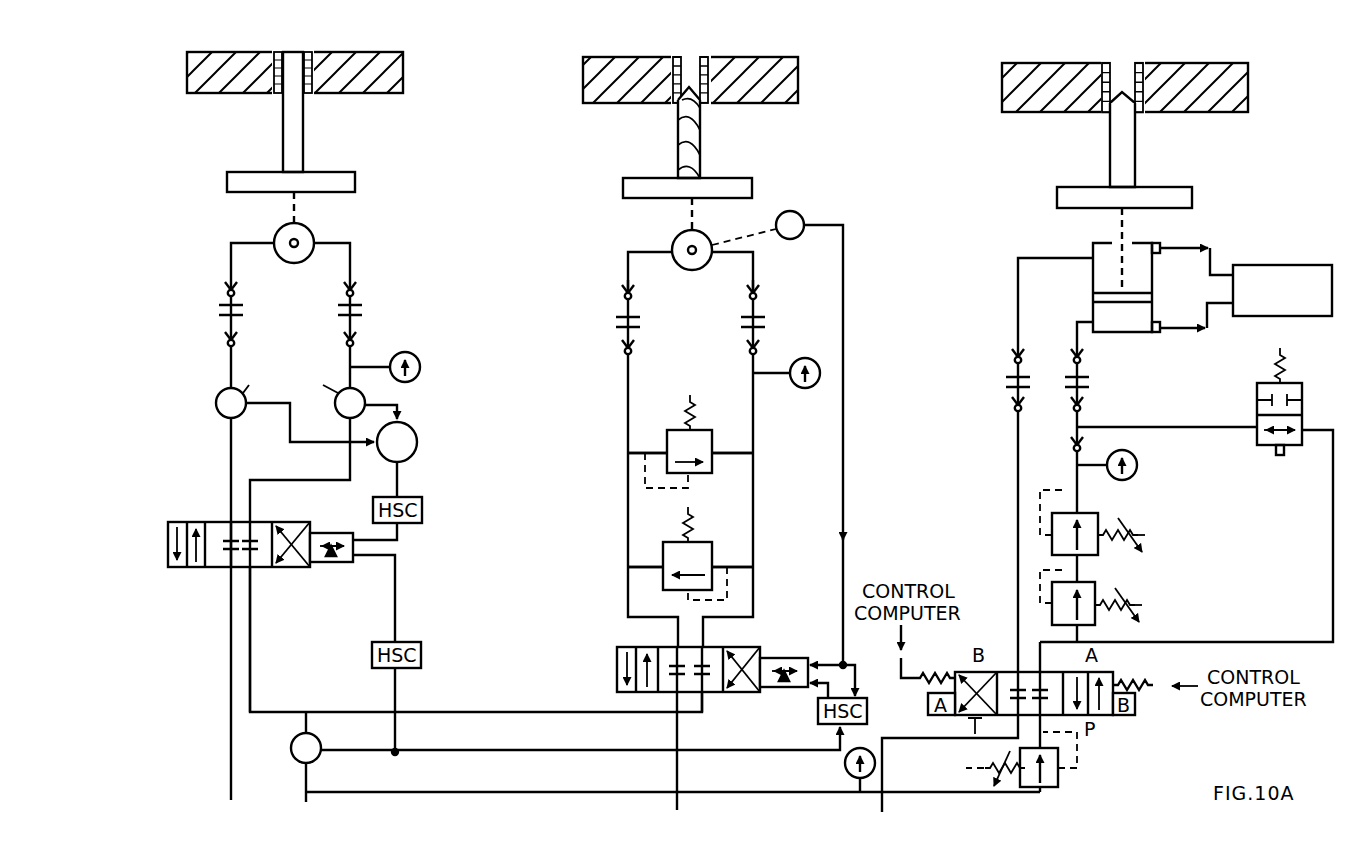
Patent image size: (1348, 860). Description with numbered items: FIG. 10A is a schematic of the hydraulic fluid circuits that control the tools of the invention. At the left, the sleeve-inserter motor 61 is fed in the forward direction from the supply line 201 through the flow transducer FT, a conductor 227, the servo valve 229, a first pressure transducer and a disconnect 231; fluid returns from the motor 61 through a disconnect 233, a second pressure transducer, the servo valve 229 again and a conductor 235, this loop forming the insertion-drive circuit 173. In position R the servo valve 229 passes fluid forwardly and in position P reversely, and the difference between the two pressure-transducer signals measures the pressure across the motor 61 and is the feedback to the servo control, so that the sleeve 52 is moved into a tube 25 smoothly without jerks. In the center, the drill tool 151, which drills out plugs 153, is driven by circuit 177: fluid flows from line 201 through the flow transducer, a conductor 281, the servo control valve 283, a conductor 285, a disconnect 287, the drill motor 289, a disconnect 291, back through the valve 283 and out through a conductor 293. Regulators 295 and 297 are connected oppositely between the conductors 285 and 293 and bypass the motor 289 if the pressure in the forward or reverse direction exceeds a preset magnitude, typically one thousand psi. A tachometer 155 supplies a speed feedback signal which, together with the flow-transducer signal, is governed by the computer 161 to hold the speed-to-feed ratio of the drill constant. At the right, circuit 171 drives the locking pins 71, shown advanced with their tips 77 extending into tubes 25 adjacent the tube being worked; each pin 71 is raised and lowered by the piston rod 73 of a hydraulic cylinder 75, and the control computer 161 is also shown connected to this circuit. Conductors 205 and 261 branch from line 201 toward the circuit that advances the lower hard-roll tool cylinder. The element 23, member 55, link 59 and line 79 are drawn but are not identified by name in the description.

The wall / workpiece 23 is at (738, 79).
The tube 25 is at (310, 95).
The sleeve 52 is at (270, 86).
The shaft 55 is at (271, 112).
The connecting link 59 is at (265, 207).
The motor 61 is at (310, 233).
The disconnect 233 is at (252, 313).
The disconnect 231 is at (332, 313).
The hydraulic fluid circuit 173 is at (423, 328).
The servo valve 229 is at (263, 544).
The conductor 235 is at (202, 609).
The conductor 227 is at (272, 639).
The line 201 is at (646, 757).
The plug 153 is at (665, 110).
The drill tool 151 is at (666, 138).
The tachometer 155 is at (783, 438).
The drill motor 289 is at (671, 242).
The disconnect 291 is at (605, 320).
The disconnect 287 is at (727, 320).
The conductor 293 is at (625, 585).
The regulator 297 is at (690, 424).
The conductor 285 is at (756, 503).
The regulator 295 is at (690, 547).
The hydraulic fluid circuit 177 is at (822, 428).
The servo control valve 283 is at (742, 671).
The conductor 281 is at (728, 717).
The tip 77 is at (1103, 114).
The locking pin 71 is at (1102, 145).
The piston rod 73 is at (1100, 250).
The cylinder line 79 is at (1072, 391).
The hydraulic cylinder 75 is at (1163, 287).
The computer 161 is at (1290, 278).
The hydraulic fluid circuit 171 is at (1232, 367).
The conductor 205 is at (1046, 756).
The conductor 261 is at (950, 767).